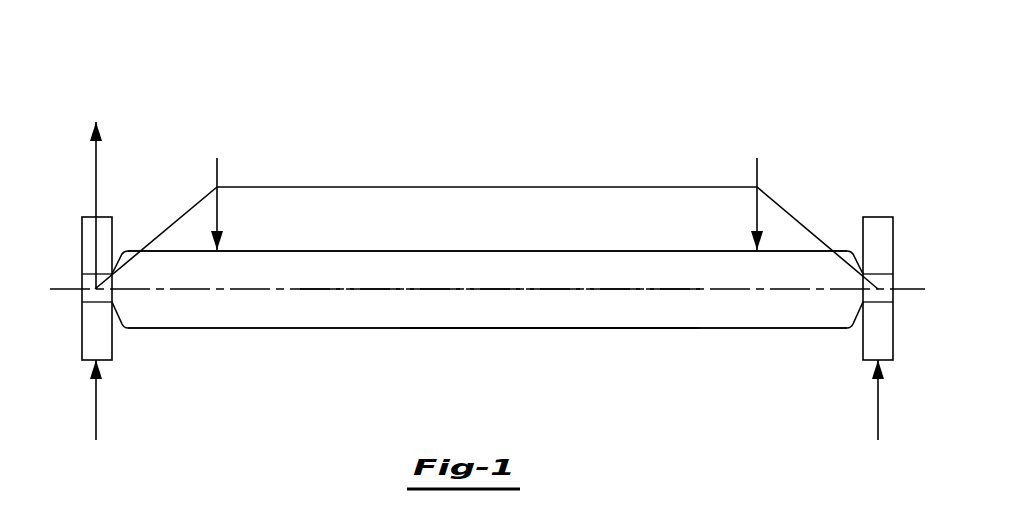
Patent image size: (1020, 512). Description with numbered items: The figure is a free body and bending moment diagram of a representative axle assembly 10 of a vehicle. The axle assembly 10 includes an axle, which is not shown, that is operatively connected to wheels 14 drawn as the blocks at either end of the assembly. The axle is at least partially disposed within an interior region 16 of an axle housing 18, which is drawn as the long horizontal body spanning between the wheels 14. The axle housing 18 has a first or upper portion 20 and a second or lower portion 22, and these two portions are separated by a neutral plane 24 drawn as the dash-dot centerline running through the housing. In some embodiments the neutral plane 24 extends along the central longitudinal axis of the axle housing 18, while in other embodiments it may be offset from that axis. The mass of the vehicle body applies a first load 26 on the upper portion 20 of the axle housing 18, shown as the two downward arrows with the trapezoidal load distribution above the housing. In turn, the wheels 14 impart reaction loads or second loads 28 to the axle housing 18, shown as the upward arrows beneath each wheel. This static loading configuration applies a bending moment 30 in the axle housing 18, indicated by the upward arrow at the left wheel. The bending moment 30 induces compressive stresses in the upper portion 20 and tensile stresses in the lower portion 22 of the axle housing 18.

The axle assembly 10 is at (673, 102).
The wheels 14 is at (90, 237).
The interior region 16 is at (730, 317).
The axle housing 18 is at (305, 310).
The upper portion 20 is at (365, 250).
The lower portion 22 is at (536, 328).
The neutral plane 24 is at (488, 289).
The first load 26 is at (486, 211).
The second loads 28 is at (491, 415).
The bending moment 30 is at (112, 202).